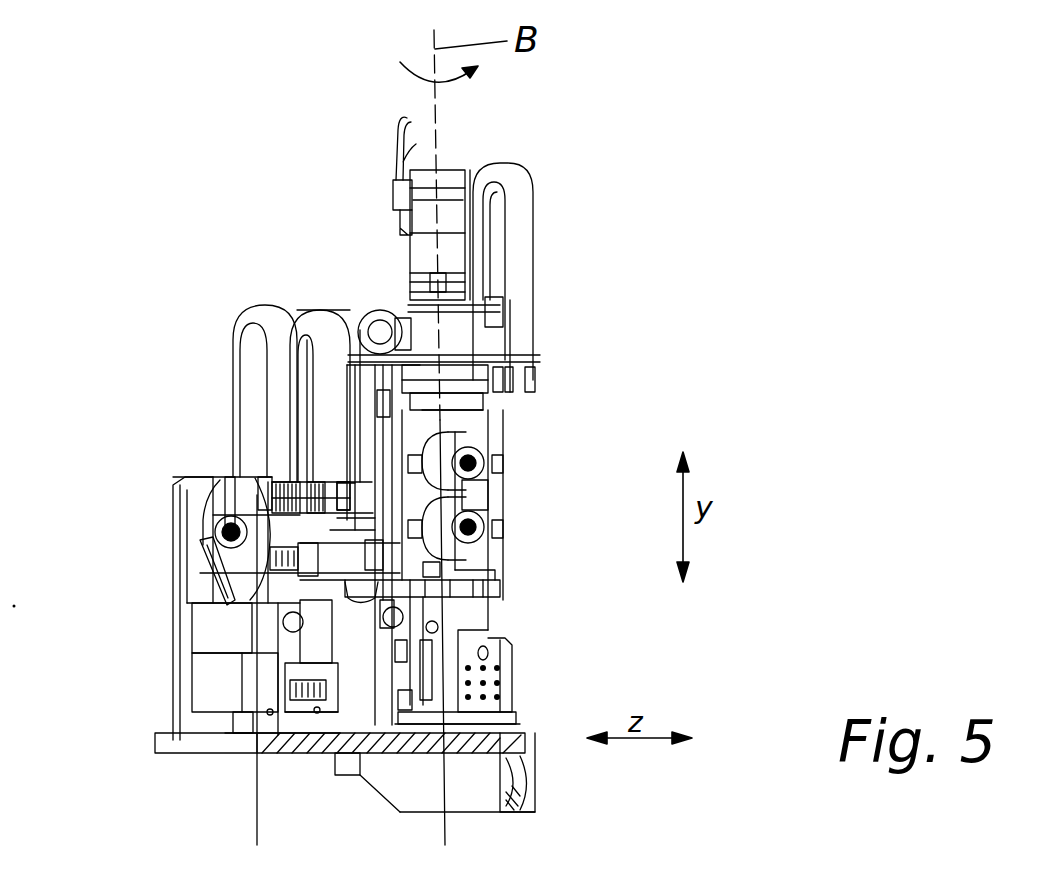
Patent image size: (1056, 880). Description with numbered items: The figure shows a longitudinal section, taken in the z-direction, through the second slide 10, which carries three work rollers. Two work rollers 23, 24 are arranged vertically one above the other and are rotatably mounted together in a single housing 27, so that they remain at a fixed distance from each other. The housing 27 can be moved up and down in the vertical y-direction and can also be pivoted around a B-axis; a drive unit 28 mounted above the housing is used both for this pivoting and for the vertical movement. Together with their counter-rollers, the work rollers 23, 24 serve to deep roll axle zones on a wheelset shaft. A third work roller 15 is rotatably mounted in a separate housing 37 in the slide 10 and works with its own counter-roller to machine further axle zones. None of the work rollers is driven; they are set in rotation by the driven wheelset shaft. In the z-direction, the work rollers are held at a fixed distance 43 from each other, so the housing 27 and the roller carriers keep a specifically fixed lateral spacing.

The second slide 10 is at (645, 285).
The work roller 15 is at (253, 490).
The work roller 23 is at (490, 547).
The work roller 24 is at (473, 440).
The housing 27 is at (472, 477).
The drive unit 28 is at (457, 180).
The housing 37 is at (213, 515).
The fixed distance 43 is at (440, 832).